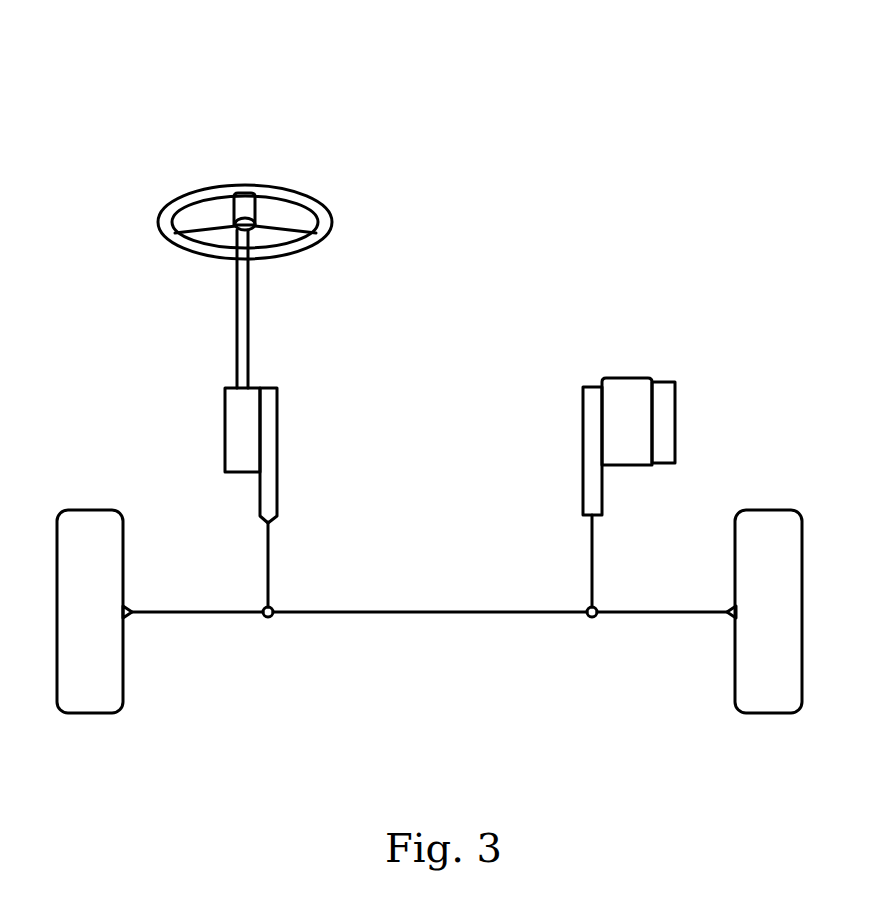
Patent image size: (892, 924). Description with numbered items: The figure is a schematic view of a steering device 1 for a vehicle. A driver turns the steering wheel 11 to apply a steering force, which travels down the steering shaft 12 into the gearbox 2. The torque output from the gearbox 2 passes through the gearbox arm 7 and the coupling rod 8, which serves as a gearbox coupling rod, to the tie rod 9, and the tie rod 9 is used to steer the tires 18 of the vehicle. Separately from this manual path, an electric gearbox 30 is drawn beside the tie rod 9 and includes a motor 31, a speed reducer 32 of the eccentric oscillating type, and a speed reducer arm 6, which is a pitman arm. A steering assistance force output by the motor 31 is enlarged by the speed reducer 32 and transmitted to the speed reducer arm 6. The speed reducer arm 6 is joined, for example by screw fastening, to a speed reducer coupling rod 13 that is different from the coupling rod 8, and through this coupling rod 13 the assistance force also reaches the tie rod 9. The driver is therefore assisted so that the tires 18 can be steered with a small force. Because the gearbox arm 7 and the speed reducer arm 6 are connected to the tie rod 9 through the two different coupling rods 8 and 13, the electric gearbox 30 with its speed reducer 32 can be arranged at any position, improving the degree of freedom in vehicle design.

The steering device 1 is at (407, 128).
The gearbox 2 is at (210, 430).
The speed reducer arm 6 is at (597, 385).
The gearbox arm 7 is at (266, 385).
The coupling rod 8 is at (263, 560).
The tie rod 9 is at (360, 615).
The steering wheel 11 is at (222, 185).
The steering shaft 12 is at (237, 333).
The speed reducer coupling rod 13 is at (597, 557).
The tires 18 is at (93, 698).
The electric gearbox 30 is at (757, 312).
The motor 31 is at (662, 420).
The speed reducer 32 is at (632, 388).